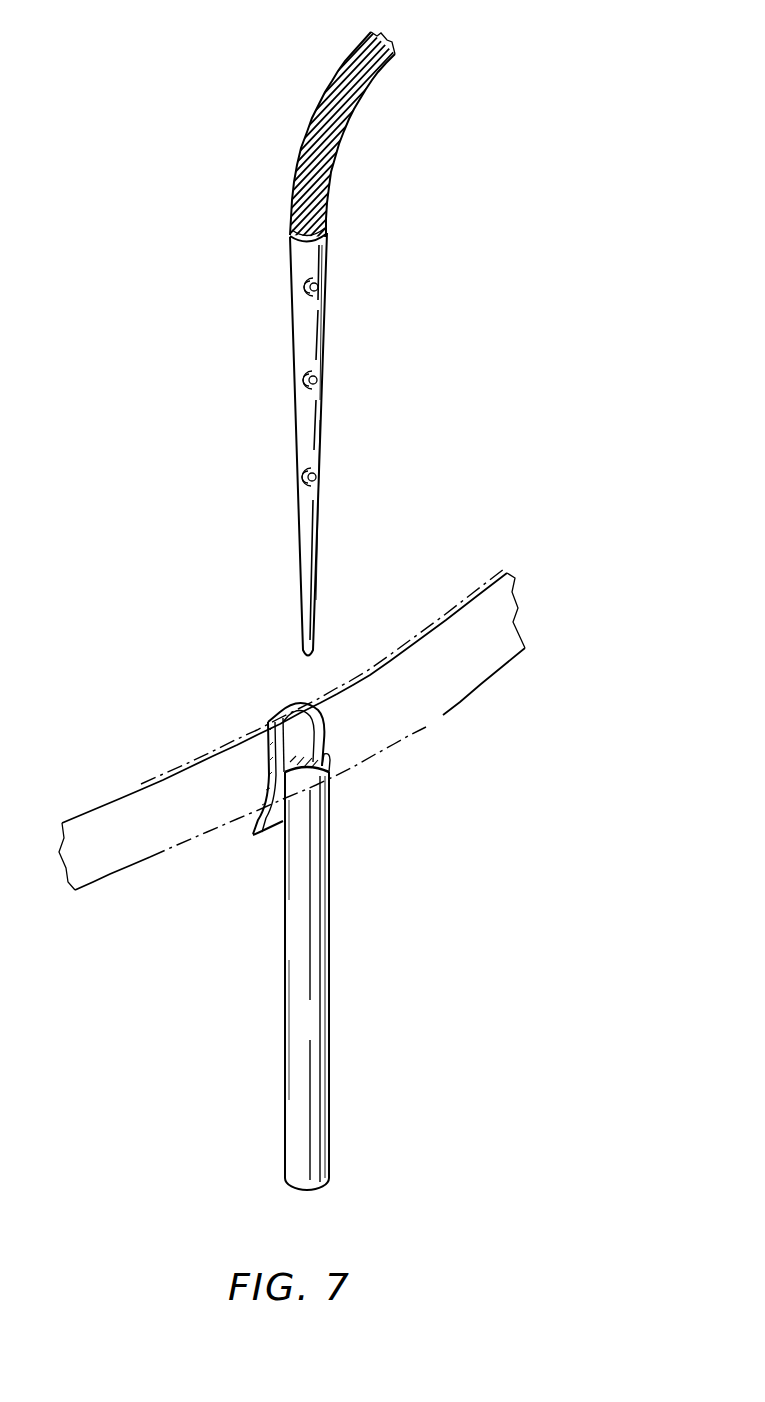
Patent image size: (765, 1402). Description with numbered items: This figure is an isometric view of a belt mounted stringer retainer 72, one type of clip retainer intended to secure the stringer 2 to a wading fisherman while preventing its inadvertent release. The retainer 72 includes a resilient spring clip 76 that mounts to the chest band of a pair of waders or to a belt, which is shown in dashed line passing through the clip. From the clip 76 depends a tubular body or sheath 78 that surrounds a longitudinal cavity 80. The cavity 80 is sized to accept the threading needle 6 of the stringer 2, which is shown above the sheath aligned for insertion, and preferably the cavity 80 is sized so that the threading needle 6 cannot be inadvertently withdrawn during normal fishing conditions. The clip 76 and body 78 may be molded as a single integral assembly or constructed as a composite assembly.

The stringer 2 is at (330, 180).
The threading needle 6 is at (320, 505).
The retainer 72 is at (407, 923).
The resilient spring clip 76 is at (277, 720).
The tubular body or sheath 78 is at (330, 1068).
The longitudinal cavity 80 is at (327, 755).